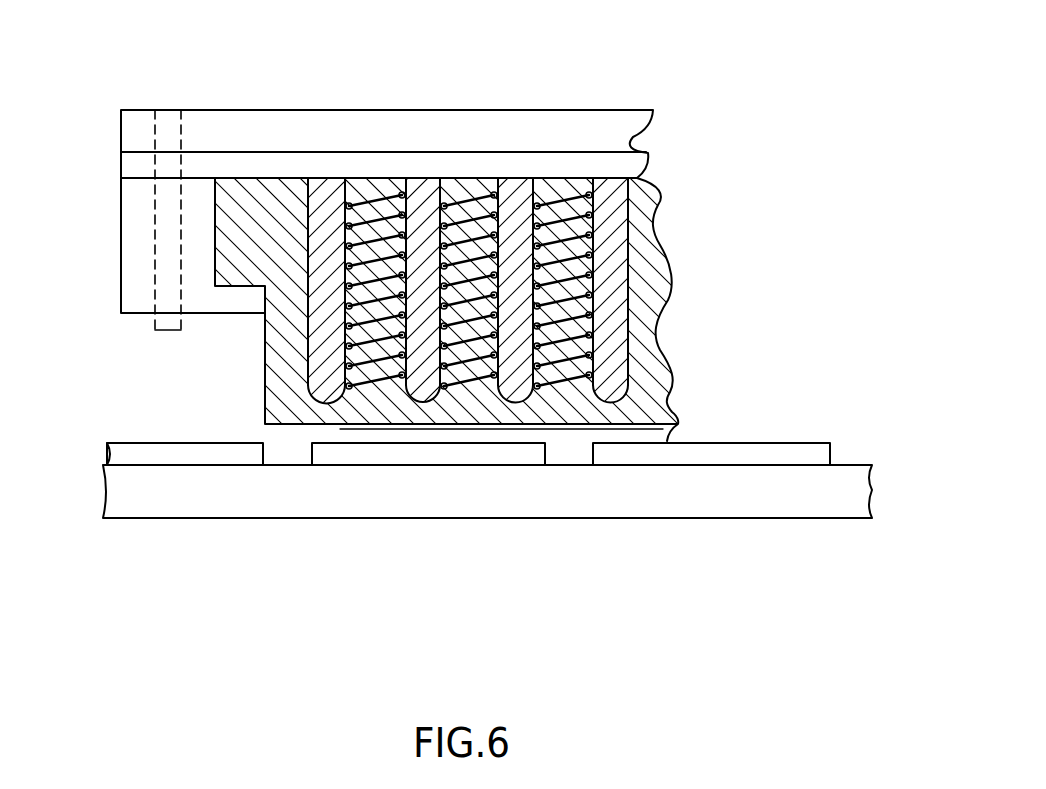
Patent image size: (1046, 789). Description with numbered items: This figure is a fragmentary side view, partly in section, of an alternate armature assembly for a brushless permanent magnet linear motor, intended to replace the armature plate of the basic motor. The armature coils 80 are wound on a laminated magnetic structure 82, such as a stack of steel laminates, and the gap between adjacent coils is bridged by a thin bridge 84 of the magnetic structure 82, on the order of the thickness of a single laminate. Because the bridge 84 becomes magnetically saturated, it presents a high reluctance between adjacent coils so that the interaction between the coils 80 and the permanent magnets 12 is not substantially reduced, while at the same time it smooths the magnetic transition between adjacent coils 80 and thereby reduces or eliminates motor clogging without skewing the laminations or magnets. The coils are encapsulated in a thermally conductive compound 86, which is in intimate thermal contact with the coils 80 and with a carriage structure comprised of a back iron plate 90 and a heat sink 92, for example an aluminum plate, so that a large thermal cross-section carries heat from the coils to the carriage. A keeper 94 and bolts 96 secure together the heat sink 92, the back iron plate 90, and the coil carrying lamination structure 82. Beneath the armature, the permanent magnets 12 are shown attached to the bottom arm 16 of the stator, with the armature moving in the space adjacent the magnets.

The permanent magnets 12 is at (178, 455).
The bottom arm 16 is at (812, 497).
The armature coils 80 is at (400, 198).
The laminated magnetic structure 82 is at (283, 192).
The thin bridge 84 is at (323, 413).
The thermally conductive encapsulating compound 86 is at (337, 200).
The back iron plate 90 is at (130, 163).
The heat sink 92 is at (205, 113).
The keeper 94 is at (133, 256).
The bolts 96 is at (168, 332).